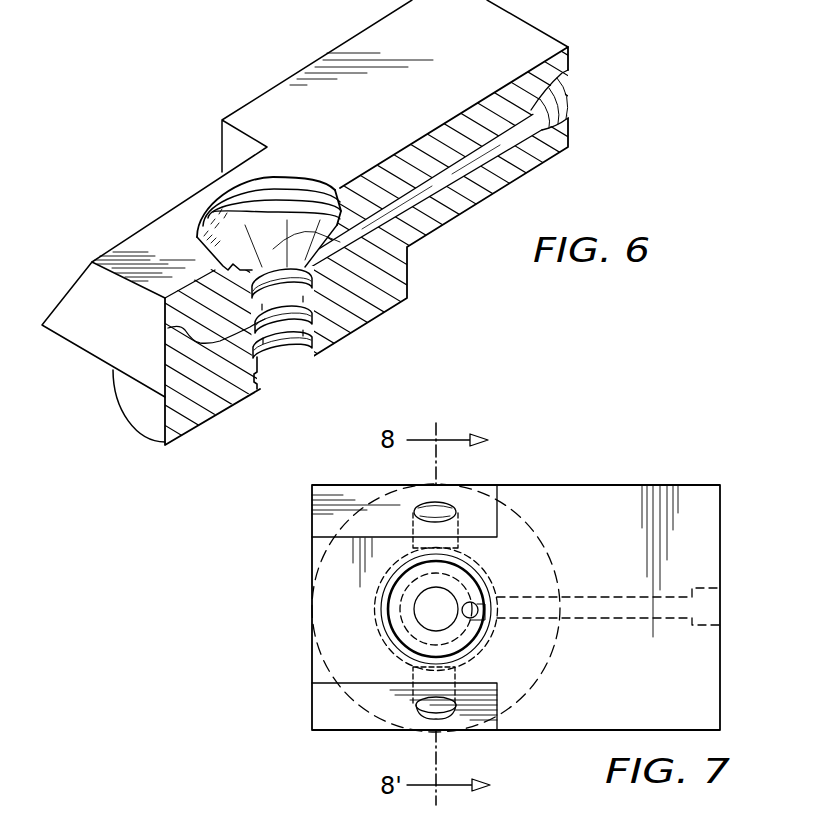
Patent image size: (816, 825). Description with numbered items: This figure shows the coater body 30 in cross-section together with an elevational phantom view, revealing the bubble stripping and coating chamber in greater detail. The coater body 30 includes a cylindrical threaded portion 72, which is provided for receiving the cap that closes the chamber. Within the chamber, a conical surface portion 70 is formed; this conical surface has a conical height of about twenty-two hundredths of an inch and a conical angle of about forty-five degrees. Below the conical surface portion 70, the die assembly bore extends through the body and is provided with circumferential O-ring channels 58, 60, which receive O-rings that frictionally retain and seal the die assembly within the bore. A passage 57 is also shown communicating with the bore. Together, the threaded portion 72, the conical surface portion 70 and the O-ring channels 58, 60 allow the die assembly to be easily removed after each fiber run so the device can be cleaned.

In FIG. 6, the tool holder block 30 is at (244, 93).
In FIG. 7, the tool holder block 30 is at (298, 612).
In FIG. 6, the cylindrical threaded portion 72 is at (222, 207).
In FIG. 6, the conical surface portion 70 is at (340, 242).
In FIG. 6, the circumferential O-ring channel 58 is at (316, 280).
In FIG. 6, the circumferential O-ring channel 60 is at (316, 346).
In FIG. 6, the coolant passage 57 is at (168, 328).